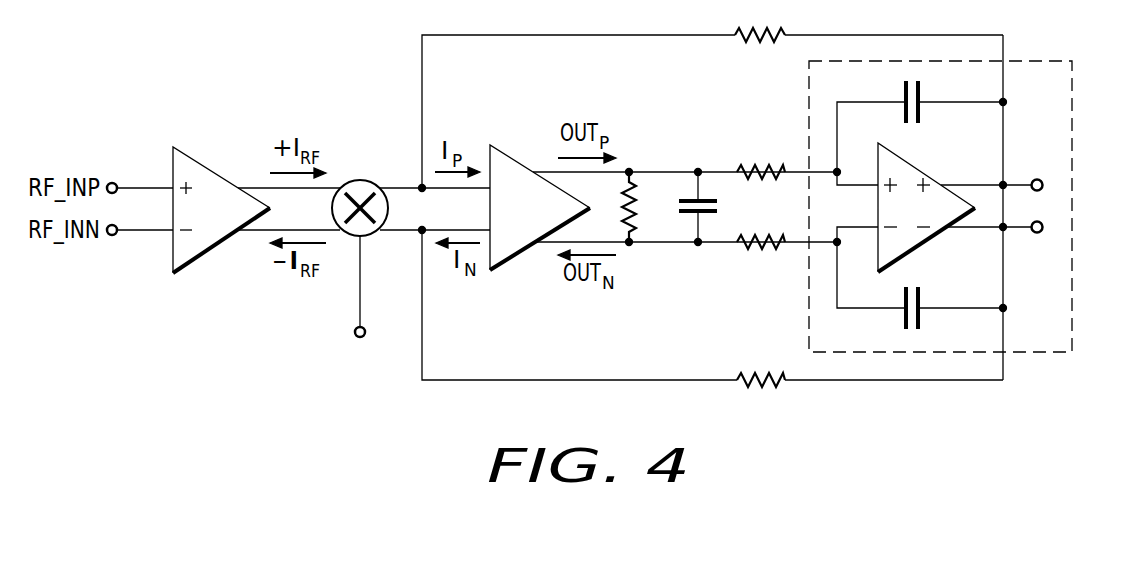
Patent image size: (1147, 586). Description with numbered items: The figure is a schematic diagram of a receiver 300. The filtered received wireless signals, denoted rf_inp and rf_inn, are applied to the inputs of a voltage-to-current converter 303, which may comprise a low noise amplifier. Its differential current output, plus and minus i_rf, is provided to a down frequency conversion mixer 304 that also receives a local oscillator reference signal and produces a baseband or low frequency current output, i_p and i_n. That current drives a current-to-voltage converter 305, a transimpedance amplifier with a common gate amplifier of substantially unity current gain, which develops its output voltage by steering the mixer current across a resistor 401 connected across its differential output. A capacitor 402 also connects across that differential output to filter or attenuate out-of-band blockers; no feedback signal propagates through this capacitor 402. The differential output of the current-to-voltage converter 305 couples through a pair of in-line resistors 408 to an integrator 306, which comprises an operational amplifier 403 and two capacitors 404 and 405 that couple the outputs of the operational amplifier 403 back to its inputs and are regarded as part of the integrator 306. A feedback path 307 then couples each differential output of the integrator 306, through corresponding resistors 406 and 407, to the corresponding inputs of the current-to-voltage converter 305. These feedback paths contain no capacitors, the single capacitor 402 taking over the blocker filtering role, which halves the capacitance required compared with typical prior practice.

The receiver 300 is at (442, 436).
The voltage-to-current converter 303 is at (214, 169).
The down frequency conversion mixer 304 is at (360, 180).
The current-to-voltage converter 305 is at (505, 153).
The integrator 306 is at (1073, 105).
The feedback path 307 is at (602, 36).
The resistor 401 is at (638, 212).
The capacitor 402 is at (710, 215).
The operational amplifier 403 is at (918, 173).
The capacitor 404 is at (920, 112).
The capacitor 405 is at (920, 300).
The resistor 406 is at (758, 45).
The resistor 407 is at (766, 374).
The in-line resistors 408 is at (749, 197).